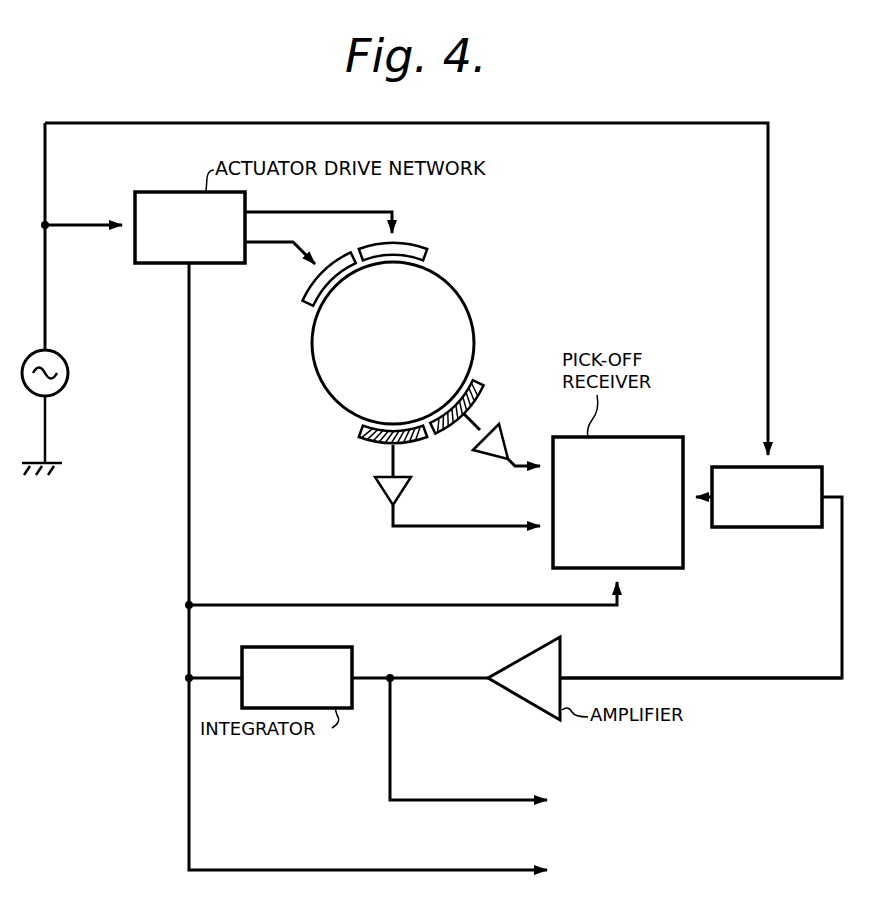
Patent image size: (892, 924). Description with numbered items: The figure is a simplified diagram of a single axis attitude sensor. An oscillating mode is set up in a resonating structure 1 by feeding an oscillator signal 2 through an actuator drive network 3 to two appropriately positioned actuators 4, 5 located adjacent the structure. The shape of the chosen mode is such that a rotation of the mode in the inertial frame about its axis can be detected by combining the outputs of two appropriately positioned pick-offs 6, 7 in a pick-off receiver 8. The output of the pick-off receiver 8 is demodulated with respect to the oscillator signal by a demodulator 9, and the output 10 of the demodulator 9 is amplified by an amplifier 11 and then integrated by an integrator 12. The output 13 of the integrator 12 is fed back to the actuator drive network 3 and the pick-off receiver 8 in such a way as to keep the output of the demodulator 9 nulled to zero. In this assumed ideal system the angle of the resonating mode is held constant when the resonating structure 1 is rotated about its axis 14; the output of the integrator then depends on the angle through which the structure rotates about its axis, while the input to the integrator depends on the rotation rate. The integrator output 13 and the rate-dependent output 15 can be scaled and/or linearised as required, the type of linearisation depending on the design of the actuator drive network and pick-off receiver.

The resonating structure 1 is at (450, 286).
The oscillator signal 2 is at (65, 225).
The actuator drive network 3 is at (159, 192).
The actuator 4 is at (313, 287).
The actuator 5 is at (415, 246).
The pick-off 6 is at (484, 394).
The pick-off 7 is at (372, 448).
The pick-off receiver 8 is at (652, 437).
The demodulator 9 is at (802, 467).
The output of demodulator 10 is at (703, 677).
The amplifier 11 is at (520, 657).
The integrator 12 is at (315, 647).
The output of integrator 13 is at (210, 677).
The axis 14 is at (392, 345).
The output 15 is at (468, 739).